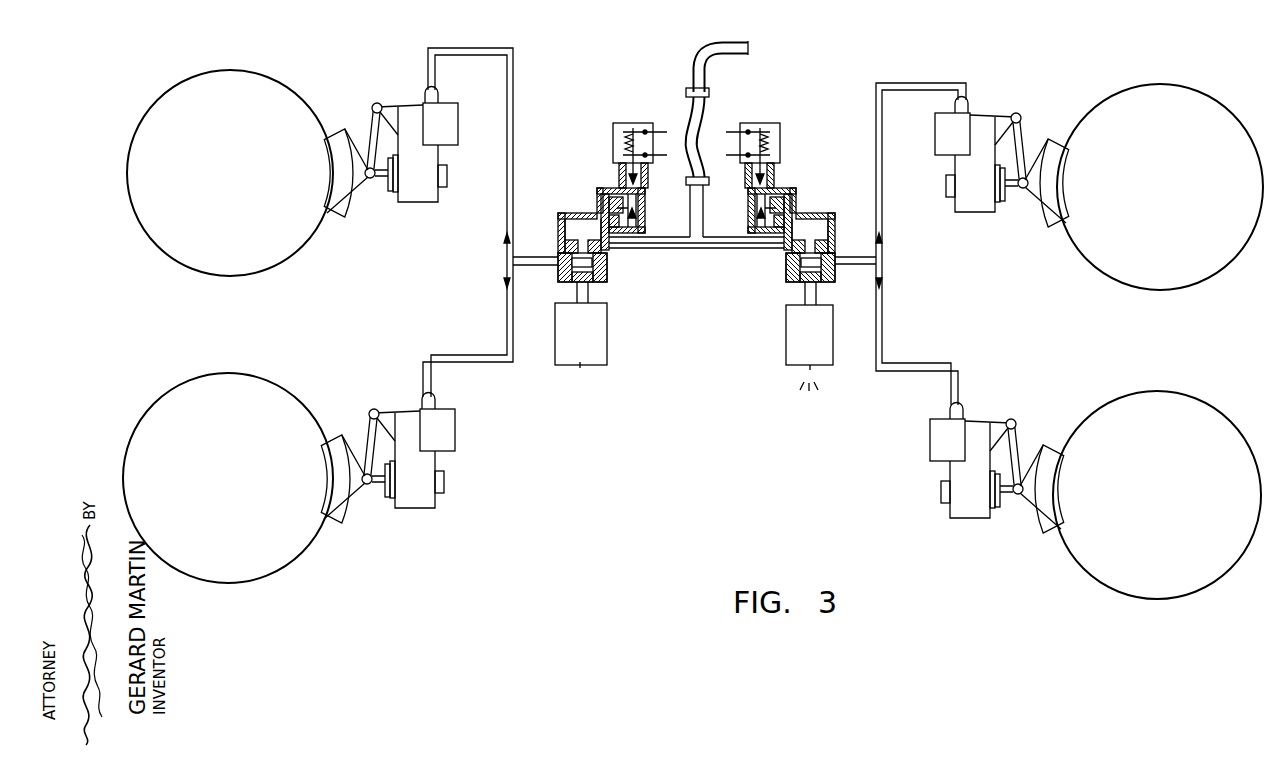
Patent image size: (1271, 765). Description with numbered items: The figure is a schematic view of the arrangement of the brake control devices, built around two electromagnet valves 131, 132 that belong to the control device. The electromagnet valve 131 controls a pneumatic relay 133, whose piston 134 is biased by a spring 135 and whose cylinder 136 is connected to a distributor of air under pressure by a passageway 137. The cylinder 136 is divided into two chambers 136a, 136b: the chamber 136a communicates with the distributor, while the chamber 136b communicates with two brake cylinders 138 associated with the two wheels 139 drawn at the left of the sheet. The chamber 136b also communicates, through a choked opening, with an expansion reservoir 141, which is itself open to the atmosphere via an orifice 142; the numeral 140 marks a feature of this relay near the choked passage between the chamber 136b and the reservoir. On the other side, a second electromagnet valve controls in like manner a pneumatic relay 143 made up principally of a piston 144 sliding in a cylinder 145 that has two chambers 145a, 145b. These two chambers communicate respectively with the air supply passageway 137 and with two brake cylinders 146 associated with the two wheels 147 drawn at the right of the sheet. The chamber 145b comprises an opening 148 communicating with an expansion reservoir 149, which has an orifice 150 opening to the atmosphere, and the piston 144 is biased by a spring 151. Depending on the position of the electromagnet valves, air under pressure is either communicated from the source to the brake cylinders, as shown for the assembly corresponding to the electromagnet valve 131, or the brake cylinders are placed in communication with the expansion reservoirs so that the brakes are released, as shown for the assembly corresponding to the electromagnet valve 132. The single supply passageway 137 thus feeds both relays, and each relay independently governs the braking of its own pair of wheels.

The electromagnet valve 131 is at (628, 123).
The electromagnet valve 132 is at (778, 125).
The pneumatic relay 133 is at (572, 211).
The piston 134 is at (560, 222).
The spring 135 is at (600, 278).
The cylinder 136 is at (608, 258).
The chamber 136a is at (557, 232).
The chamber 136b is at (608, 265).
The passageway 137 is at (718, 42).
The brake cylinders 138 is at (432, 194).
The wheels 139 is at (183, 256).
The passage 140 is at (563, 277).
The expansion reservoir 141 is at (608, 337).
The orifice 142 is at (580, 368).
The pneumatic relay 143 is at (823, 212).
The piston 144 is at (820, 228).
The cylinder 145 is at (834, 236).
The chamber 145a is at (803, 243).
The chamber 145b is at (829, 274).
The brake cylinders 146 is at (977, 203).
The wheels 147 is at (1163, 288).
The opening 148 is at (810, 287).
The expansion reservoir 149 is at (786, 348).
The orifice 150 is at (810, 370).
The spring 151 is at (803, 284).